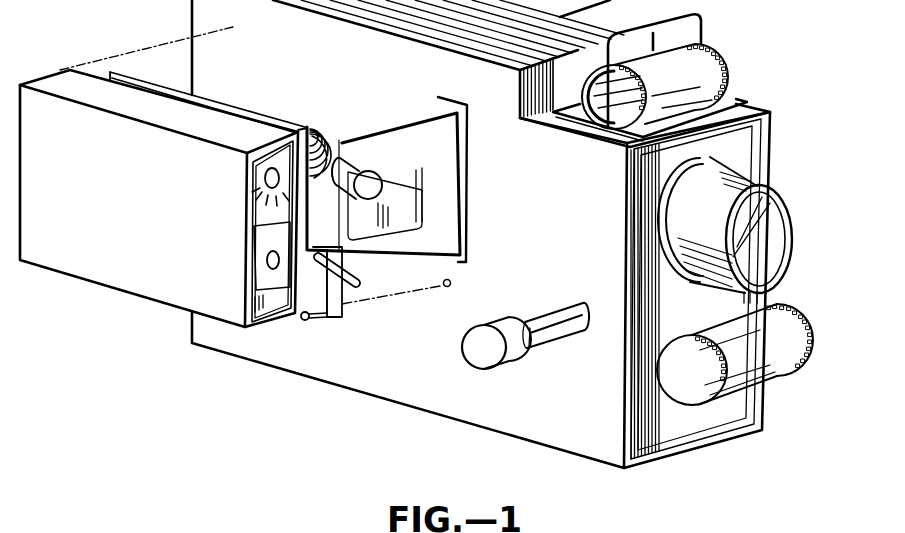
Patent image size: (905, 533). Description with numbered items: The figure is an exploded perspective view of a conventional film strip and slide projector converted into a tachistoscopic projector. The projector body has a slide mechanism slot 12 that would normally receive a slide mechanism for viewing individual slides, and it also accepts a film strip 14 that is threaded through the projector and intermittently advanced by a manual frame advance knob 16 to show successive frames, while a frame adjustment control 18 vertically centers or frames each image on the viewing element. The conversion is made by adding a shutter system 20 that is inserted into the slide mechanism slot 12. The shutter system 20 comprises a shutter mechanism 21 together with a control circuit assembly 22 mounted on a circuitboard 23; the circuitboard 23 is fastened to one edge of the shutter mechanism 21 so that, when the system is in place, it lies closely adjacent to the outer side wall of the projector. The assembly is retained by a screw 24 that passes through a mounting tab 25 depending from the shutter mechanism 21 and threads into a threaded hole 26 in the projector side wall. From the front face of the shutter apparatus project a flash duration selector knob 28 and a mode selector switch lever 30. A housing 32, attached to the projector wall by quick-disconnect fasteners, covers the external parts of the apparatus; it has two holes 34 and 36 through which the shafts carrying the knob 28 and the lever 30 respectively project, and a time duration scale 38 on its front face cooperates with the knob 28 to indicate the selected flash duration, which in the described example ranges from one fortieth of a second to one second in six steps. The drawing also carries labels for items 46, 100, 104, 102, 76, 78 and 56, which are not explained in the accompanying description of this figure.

The slide mechanism slot 12 is at (467, 167).
The film strip 14 is at (723, 58).
The manual frame advance knob 16 is at (486, 369).
The frame adjustment control 18 is at (562, 313).
The shutter system 20 is at (317, 95).
The shutter mechanism 21 is at (406, 118).
The control circuit assembly 22 is at (213, 100).
The circuitboard 23 is at (143, 81).
The screw 24 is at (305, 321).
The mounting tab 25 is at (347, 293).
The threaded hole 26 is at (447, 287).
The flash duration selector knob 28 is at (372, 148).
The mode selector switch lever 30 is at (347, 267).
The housing 32 is at (125, 296).
The hole 34 is at (257, 183).
The hole 36 is at (262, 255).
The time duration scale 38 is at (258, 201).
The lens barrel 46 is at (790, 188).
The partial numeral (adjacent figure) 100 is at (137, 526).
The partial numeral (adjacent figure) 104 is at (180, 526).
The partial numeral (adjacent figure) 102 is at (221, 526).
The partial numeral (adjacent figure) 76 is at (264, 526).
The partial numeral (adjacent figure) 78 is at (300, 526).
The partial numeral (adjacent figure) 56 is at (334, 526).